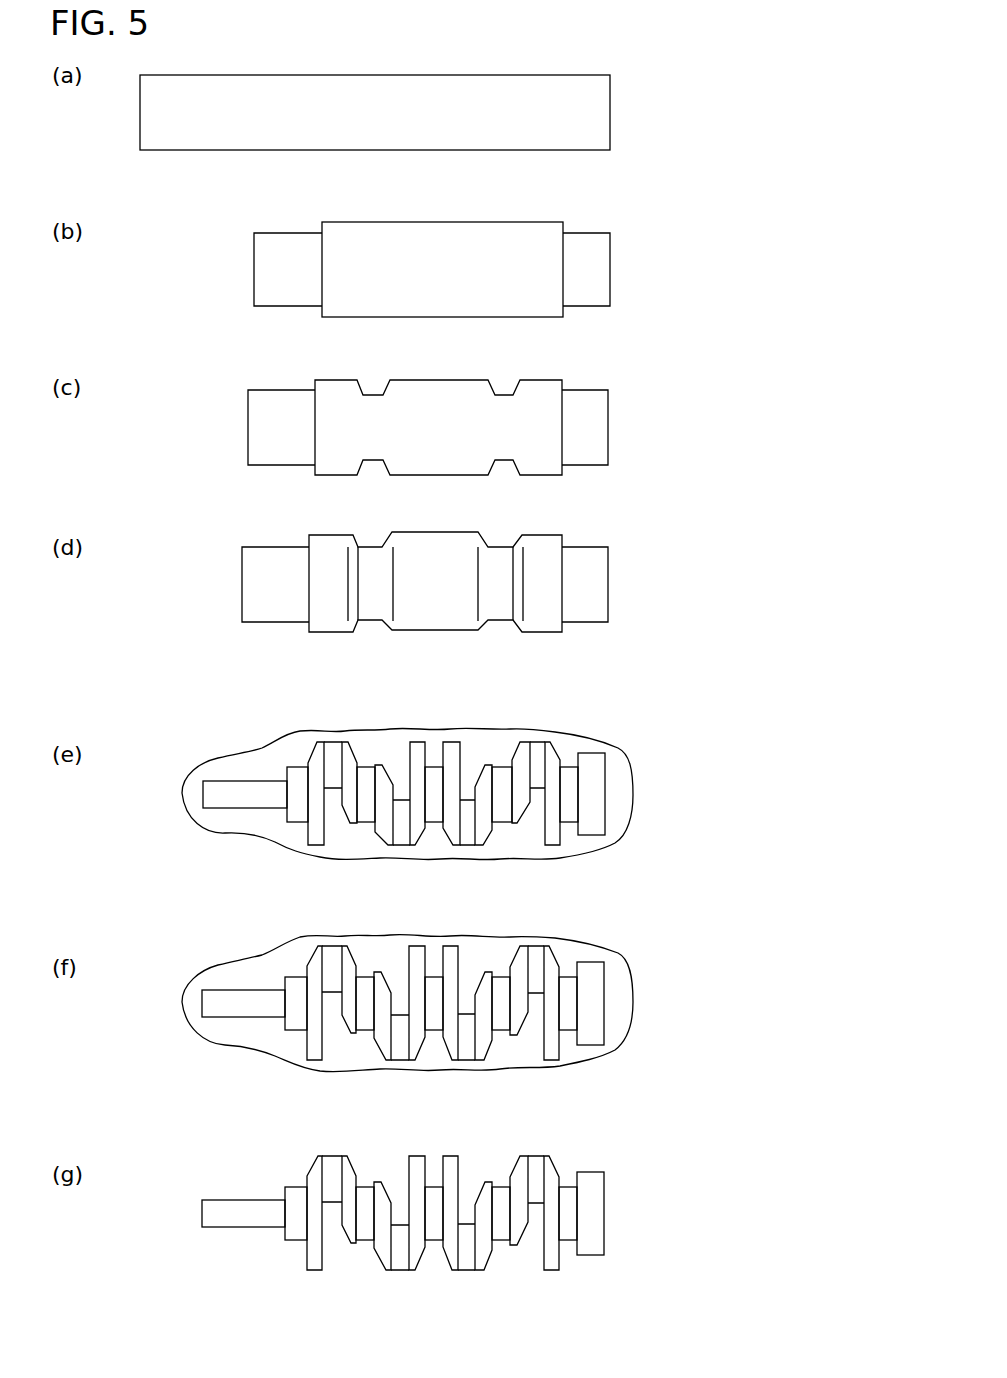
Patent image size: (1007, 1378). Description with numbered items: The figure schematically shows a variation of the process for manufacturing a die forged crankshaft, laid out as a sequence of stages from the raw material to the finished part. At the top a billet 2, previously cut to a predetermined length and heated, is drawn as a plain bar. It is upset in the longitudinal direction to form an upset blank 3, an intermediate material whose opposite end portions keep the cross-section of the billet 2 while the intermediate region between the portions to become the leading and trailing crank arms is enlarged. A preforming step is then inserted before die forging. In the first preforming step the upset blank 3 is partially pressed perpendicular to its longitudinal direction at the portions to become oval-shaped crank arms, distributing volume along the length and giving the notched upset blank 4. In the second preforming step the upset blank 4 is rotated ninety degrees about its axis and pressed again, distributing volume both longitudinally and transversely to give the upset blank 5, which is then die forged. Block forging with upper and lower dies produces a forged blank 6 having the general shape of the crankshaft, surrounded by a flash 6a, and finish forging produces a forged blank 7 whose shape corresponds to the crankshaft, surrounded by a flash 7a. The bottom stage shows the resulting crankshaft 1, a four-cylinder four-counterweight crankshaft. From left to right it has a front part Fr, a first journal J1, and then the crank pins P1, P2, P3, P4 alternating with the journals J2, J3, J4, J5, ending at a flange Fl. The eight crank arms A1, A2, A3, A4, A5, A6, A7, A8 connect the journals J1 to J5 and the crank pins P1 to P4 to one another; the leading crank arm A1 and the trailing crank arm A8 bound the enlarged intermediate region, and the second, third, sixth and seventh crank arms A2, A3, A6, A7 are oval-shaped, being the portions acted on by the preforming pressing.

The crankshaft 1 is at (429, 1220).
The billet 2 is at (625, 89).
The upset blank 3 is at (625, 244).
The upset blank 4 is at (625, 404).
The upset blank 5 is at (625, 560).
The forged blank 6 is at (436, 790).
The flash 6a is at (620, 828).
The forged blank 7 is at (435, 999).
The flash 7a is at (620, 1037).
The front part Fr is at (250, 1200).
The flange Fl is at (597, 1172).
The journal J1 is at (293, 1187).
The journal J2 is at (367, 1240).
The journal J3 is at (432, 1240).
The journal J4 is at (504, 1187).
The journal J5 is at (565, 1187).
The crank pin P1 is at (331, 1156).
The crank pin P2 is at (399, 1270).
The crank pin P3 is at (465, 1270).
The crank pin P4 is at (536, 1156).
The crank arm A1 is at (313, 1270).
The crank arm A2 is at (350, 1243).
The crank arm A3 is at (375, 1182).
The crank arm A4 is at (414, 1156).
The crank arm A5 is at (450, 1156).
The crank arm A6 is at (482, 1182).
The crank arm A7 is at (515, 1245).
The crank arm A8 is at (546, 1270).